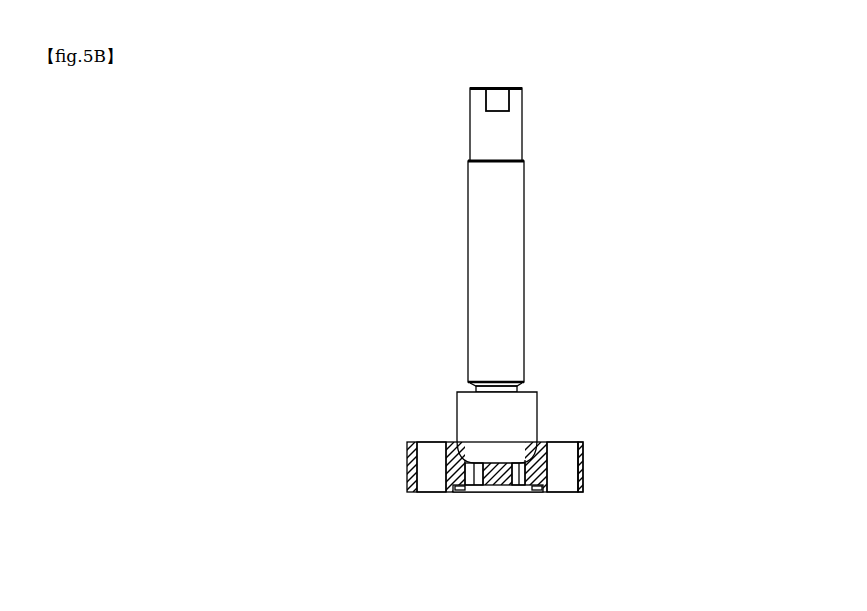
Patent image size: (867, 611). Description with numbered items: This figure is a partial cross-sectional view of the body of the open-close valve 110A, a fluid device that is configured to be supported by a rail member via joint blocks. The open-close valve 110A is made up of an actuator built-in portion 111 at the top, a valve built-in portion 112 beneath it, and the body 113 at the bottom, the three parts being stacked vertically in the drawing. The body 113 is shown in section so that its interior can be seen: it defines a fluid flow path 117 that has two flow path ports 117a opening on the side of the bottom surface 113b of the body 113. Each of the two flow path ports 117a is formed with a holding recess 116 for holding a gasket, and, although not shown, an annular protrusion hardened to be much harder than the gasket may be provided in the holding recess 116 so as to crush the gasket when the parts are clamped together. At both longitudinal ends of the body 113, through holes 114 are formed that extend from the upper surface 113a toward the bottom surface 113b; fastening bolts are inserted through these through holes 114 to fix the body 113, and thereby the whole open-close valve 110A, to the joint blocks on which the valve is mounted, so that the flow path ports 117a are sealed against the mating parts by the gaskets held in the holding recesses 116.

The open-close valve 110A is at (583, 281).
The actuator built-in portion 111 is at (493, 329).
The valve built-in portion 112 is at (483, 414).
The body 113 is at (412, 482).
The upper surface 113a is at (580, 442).
The bottom surface 113b is at (547, 492).
The through holes 114 is at (428, 465).
The holding recesses 116 is at (541, 484).
The fluid flow path 117 is at (476, 472).
The flow path ports 117a is at (467, 488).